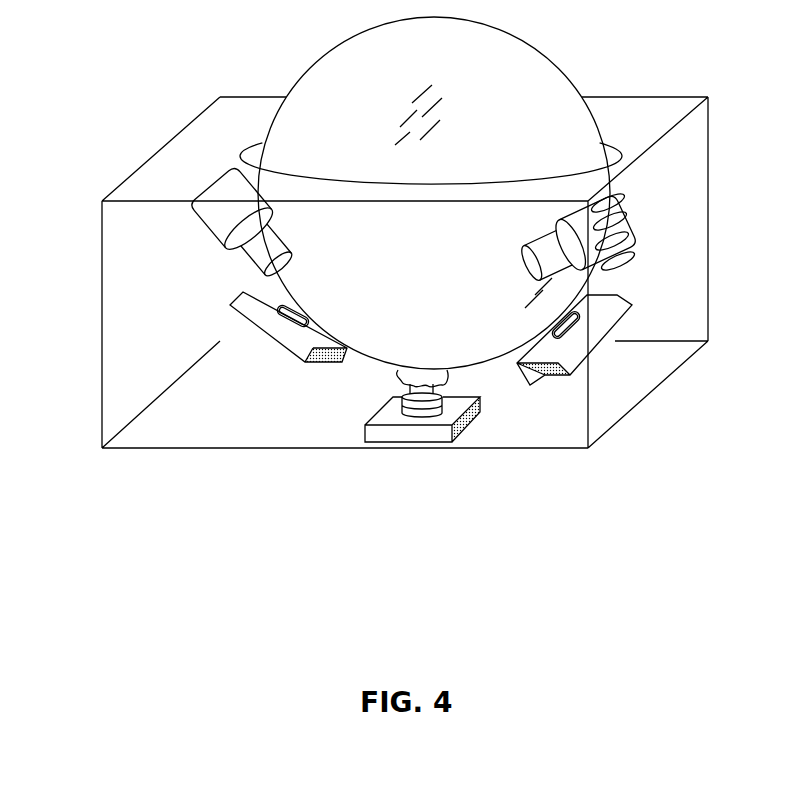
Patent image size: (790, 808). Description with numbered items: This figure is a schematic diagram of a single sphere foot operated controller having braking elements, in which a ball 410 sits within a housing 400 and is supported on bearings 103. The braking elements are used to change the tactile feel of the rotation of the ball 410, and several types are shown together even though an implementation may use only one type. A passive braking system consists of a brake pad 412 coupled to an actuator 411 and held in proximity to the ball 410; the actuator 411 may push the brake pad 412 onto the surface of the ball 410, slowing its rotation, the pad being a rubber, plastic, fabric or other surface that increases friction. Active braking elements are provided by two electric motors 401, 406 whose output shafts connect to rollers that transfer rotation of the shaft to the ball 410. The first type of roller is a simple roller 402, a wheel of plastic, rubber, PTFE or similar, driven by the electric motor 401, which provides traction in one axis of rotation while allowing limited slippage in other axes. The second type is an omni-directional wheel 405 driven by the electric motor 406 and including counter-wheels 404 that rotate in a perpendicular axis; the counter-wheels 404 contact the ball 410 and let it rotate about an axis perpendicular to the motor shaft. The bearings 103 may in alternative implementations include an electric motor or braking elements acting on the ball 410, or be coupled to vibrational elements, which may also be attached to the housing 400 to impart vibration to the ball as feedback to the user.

The housing 400 is at (102, 221).
The ball 410 is at (443, 168).
The simple roller 402 is at (218, 228).
The electric motor 401 is at (250, 270).
The bearings 103 is at (268, 335).
The counter-wheels 404 is at (620, 212).
The omni-directional wheel 405 is at (640, 243).
The electric motor 406 is at (530, 259).
The actuator 411 is at (363, 417).
The brake pad 412 is at (398, 373).